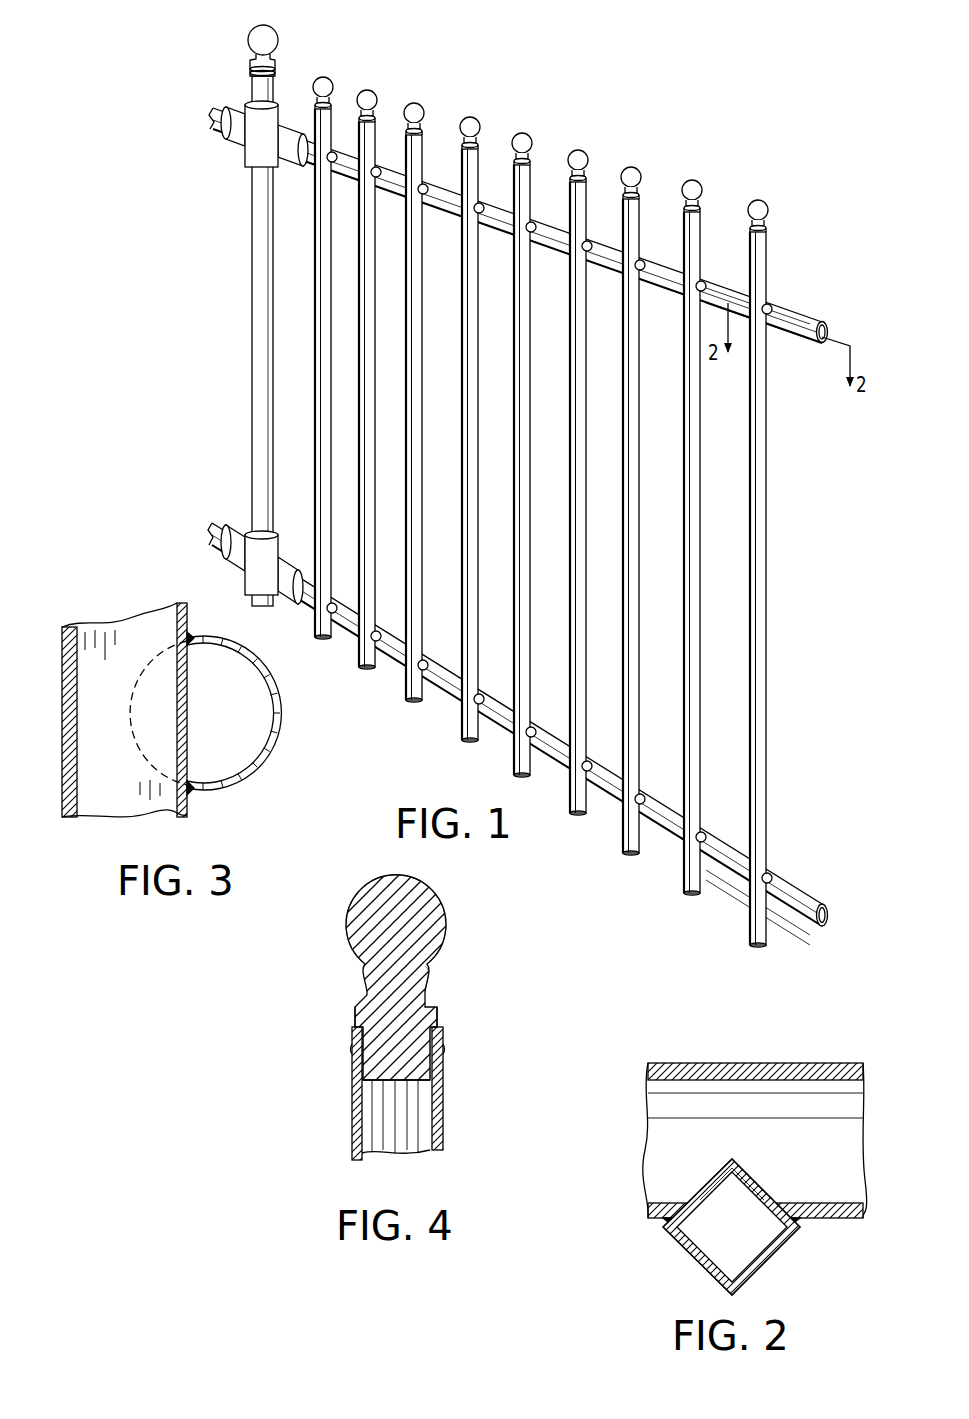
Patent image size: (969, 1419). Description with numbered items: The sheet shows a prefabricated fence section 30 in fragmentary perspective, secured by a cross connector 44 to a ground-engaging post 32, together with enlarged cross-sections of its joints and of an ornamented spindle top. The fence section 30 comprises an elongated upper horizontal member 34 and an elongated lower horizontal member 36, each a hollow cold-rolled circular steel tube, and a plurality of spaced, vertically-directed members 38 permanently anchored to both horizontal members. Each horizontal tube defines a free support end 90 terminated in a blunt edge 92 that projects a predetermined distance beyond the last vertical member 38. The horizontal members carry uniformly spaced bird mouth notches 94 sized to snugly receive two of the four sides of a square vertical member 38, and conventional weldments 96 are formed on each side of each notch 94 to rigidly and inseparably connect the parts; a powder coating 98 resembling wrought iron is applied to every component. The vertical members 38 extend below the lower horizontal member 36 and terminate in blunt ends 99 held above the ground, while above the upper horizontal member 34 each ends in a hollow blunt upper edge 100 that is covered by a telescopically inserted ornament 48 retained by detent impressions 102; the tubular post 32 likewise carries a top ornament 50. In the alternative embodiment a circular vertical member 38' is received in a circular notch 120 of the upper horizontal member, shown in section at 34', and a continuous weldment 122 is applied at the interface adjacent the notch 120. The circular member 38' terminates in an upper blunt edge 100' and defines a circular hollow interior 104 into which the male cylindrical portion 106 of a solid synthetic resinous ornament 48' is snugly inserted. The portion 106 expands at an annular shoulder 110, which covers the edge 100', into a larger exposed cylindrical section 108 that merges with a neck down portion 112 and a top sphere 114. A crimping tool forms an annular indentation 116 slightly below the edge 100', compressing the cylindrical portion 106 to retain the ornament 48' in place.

In FIG. 1, the fence section 30 is at (520, 475).
In FIG. 1, the vertically-extending post 32 is at (279, 66).
In FIG. 1, the upper horizontal member 34 is at (504, 214).
In FIG. 2, the upper horizontal member 34 is at (755, 1115).
In FIG. 1, the lower horizontal member 36 is at (212, 553).
In FIG. 1, the vertical member 38 is at (546, 527).
In FIG. 2, the vertical member 38 is at (741, 1227).
In FIG. 1, the cross connector 44 is at (285, 130).
In FIG. 1, the ornament 48 is at (540, 128).
In FIG. 1, the top ornament 50 is at (256, 25).
In FIG. 1, the free support end 90 is at (303, 150).
In FIG. 1, the blunt edge 92 is at (828, 334).
In FIG. 2, the bird mouth notch 94 is at (712, 1188).
In FIG. 1, the weldment 96 is at (376, 179).
In FIG. 2, the weldment 96 is at (662, 1226).
In FIG. 3, the powder coating 98 is at (65, 734).
In FIG. 4, the powder coating 98 is at (354, 1112).
In FIG. 2, the powder coating 98 is at (766, 1063).
In FIG. 1, the blunt end 99 is at (322, 644).
In FIG. 1, the hollow blunt upper edge 100 is at (529, 131).
In FIG. 1, the detent impression 102 is at (332, 107).
In FIG. 4, the circular hollow interior 104 is at (432, 1149).
In FIG. 4, the male cylindrical portion 106 is at (404, 1061).
In FIG. 4, the larger cylindrical section 108 is at (354, 1016).
In FIG. 4, the annular shoulder 110 is at (355, 1034).
In FIG. 4, the neck down portion 112 is at (430, 980).
In FIG. 4, the top sphere 114 is at (399, 948).
In FIG. 4, the annular indentation 116 is at (442, 1050).
In FIG. 3, the circular notch 120 is at (188, 652).
In FIG. 3, the continuous weldment 122 is at (191, 640).
In FIG. 3, the rail cross-section 34' is at (256, 721).
In FIG. 3, the circular vertical member 38' is at (111, 735).
In FIG. 4, the circular vertical member 38' is at (435, 1116).
In FIG. 4, the synthetic resinous ornament 48' is at (380, 971).
In FIG. 4, the upper blunt edge 100' is at (439, 1005).